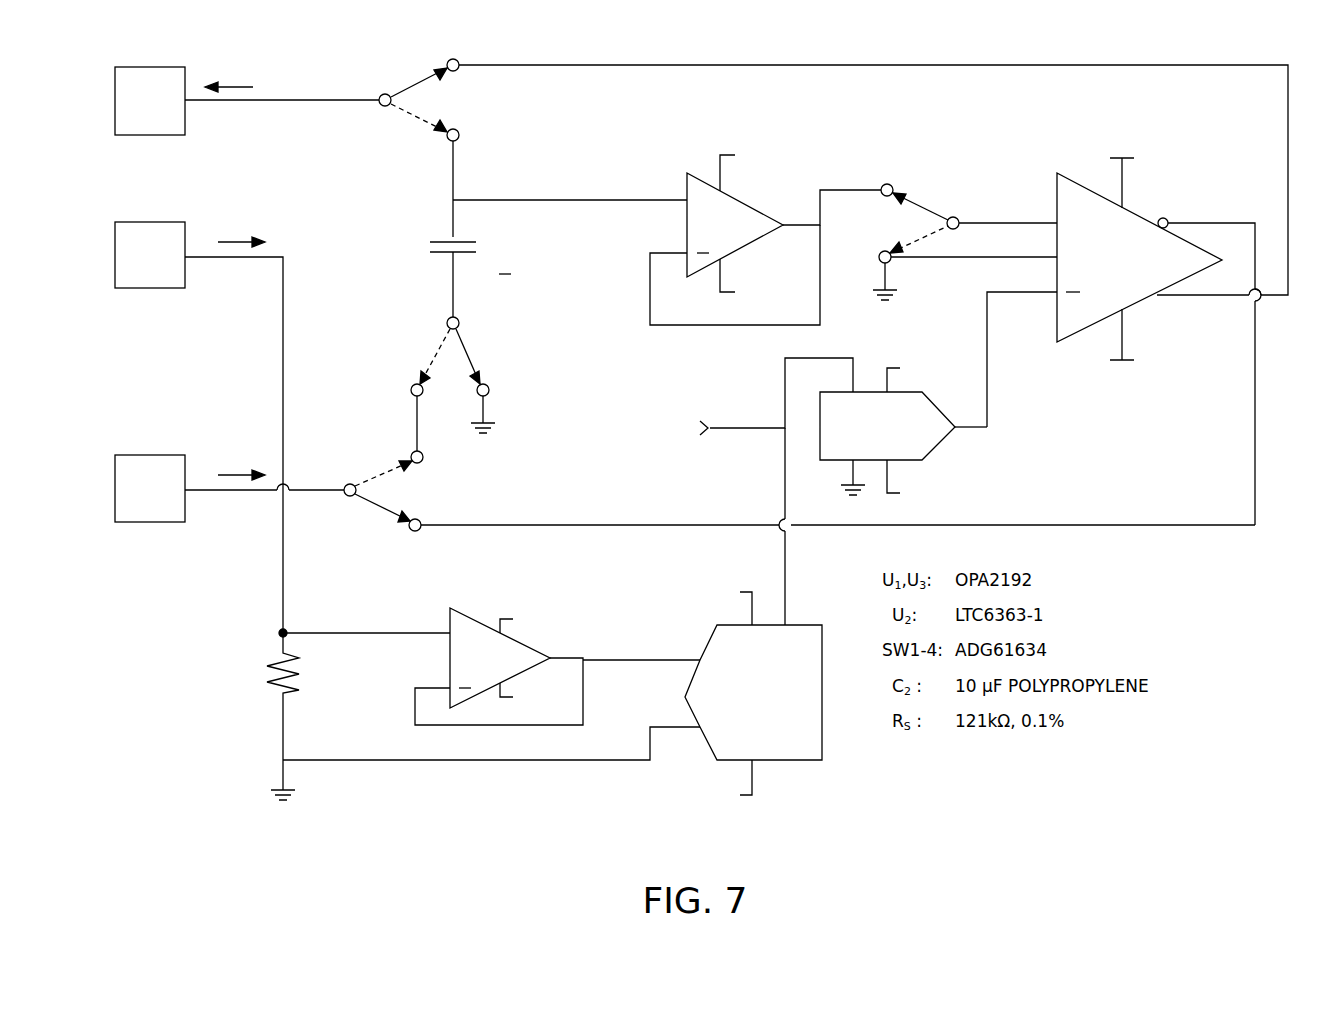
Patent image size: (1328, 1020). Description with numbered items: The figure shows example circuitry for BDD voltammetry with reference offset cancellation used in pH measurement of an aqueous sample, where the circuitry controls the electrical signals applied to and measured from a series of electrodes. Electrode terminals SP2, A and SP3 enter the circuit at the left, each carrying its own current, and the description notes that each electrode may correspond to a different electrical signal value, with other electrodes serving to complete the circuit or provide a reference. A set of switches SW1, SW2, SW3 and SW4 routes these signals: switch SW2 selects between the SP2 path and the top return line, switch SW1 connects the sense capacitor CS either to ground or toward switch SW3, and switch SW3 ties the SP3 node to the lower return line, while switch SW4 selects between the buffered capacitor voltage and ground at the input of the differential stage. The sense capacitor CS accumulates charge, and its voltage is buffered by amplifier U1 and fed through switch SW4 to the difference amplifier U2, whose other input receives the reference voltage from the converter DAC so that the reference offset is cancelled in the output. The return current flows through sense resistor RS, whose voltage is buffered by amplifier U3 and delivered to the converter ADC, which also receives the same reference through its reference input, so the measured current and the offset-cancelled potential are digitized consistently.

The sense plate 2 input SP2 is at (247, 97).
The sense plate 3 input SP3 is at (229, 483).
The node A input A is at (199, 422).
The switch 1 SW1 is at (437, 384).
The switch 2 SW2 is at (832, 169).
The switch 3 SW3 is at (799, 501).
The switch 4 SW4 is at (965, 242).
The buffer amplifier U1 is at (746, 237).
The difference amplifier U2 is at (1124, 281).
The buffer amplifier U3 is at (557, 644).
The sense capacitor CS is at (542, 258).
The sense resistor RS is at (434, 714).
The digital-to-analog converter DAC is at (844, 491).
The analog-to-digital converter ADC is at (753, 692).